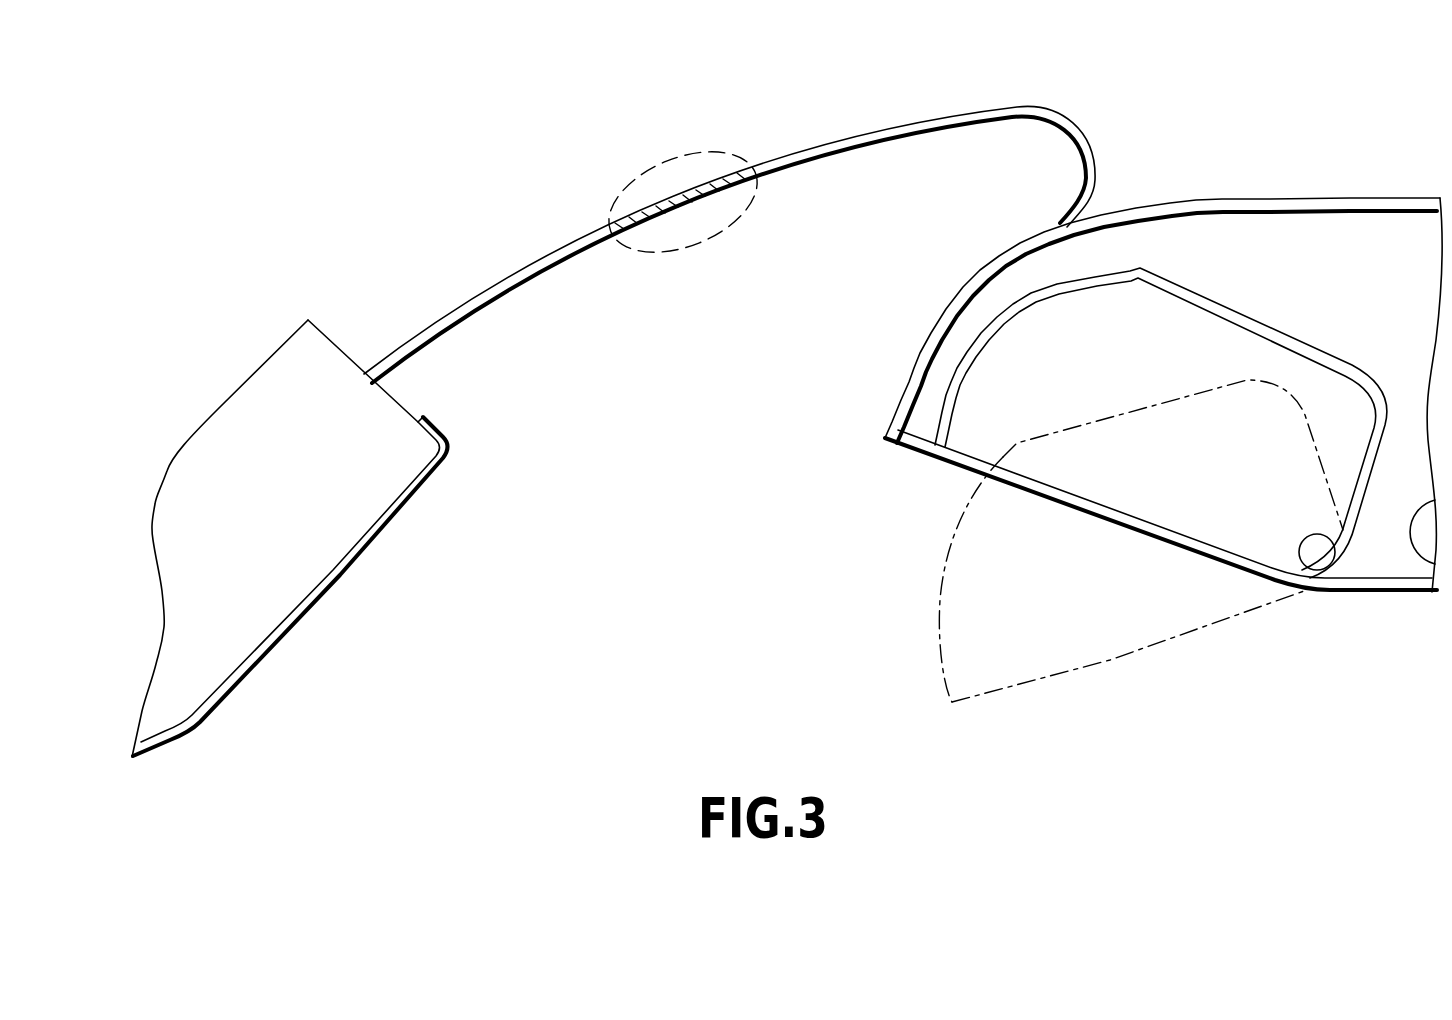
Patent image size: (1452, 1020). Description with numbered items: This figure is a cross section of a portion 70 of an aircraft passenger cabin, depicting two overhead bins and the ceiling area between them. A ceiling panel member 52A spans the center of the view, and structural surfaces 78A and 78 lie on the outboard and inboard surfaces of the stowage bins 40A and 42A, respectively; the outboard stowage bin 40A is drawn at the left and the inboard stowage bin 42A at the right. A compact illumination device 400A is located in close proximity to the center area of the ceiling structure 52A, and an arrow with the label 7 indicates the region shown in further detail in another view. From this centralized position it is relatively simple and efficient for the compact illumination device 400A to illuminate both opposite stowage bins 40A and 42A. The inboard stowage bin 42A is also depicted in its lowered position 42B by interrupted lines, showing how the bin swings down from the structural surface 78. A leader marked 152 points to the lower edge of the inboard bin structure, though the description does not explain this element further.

The section view indicator 7 is at (725, 140).
The compact illumination device 400A is at (668, 197).
The ceiling panel member 52A is at (587, 242).
The structural surface 78 is at (918, 373).
The structural surface 78A is at (380, 520).
The outboard stowage bin 40A is at (257, 608).
The portion of an aircraft cabin 70 is at (596, 605).
The inboard stowage bin 42A is at (975, 447).
The lowered position 42B is at (947, 673).
The bottom flange 152 is at (1140, 535).